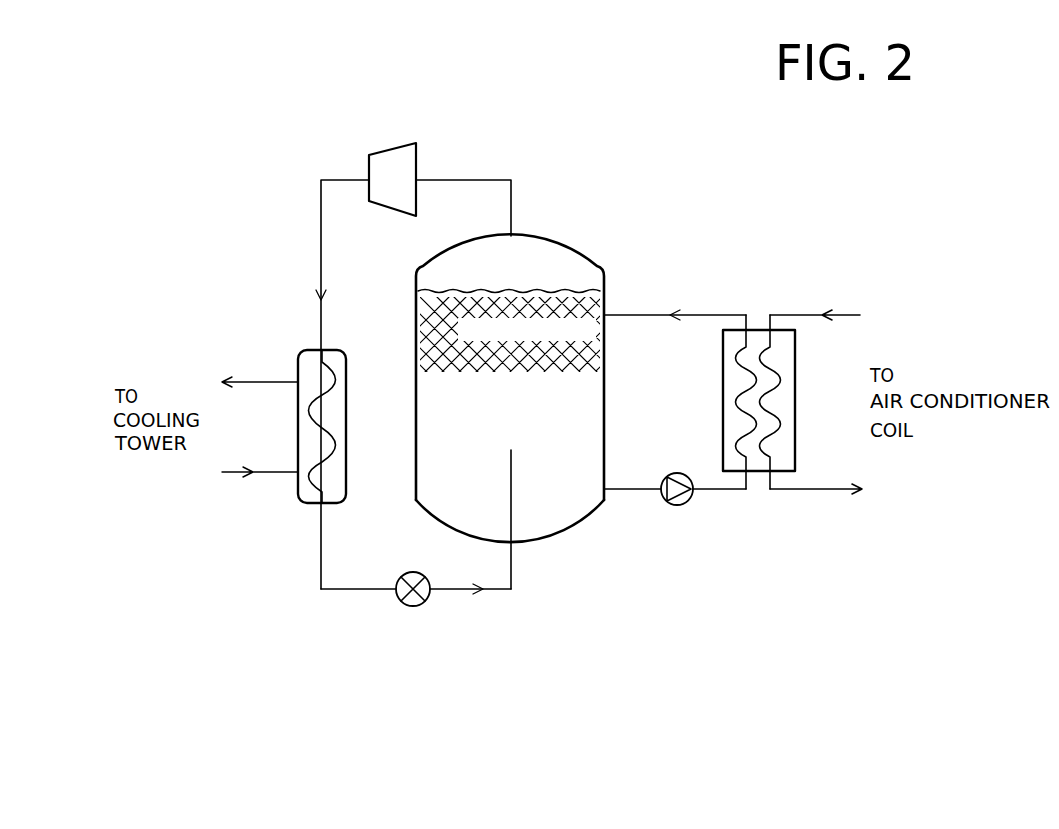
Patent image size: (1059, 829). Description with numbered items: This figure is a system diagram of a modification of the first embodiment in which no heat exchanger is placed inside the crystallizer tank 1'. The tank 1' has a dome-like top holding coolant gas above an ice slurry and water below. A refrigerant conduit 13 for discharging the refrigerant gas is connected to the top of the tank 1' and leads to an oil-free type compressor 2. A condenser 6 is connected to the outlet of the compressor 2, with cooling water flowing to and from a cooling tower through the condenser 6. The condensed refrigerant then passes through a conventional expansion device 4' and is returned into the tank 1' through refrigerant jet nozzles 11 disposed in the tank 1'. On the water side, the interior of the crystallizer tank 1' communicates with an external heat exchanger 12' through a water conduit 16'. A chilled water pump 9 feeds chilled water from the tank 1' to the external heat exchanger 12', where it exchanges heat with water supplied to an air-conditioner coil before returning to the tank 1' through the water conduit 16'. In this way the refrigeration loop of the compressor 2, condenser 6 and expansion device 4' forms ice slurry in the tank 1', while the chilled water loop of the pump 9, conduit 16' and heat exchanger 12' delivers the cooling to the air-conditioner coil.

The compressor 2 is at (392, 152).
The refrigerant conduit 13 is at (340, 178).
The crystallizer tank 1' is at (511, 368).
The water conduit 16' is at (675, 295).
The condenser 6 is at (298, 365).
The refrigerant jet nozzles 11 is at (511, 480).
The chilled water pump 9 is at (677, 506).
The external heat exchanger 12' is at (759, 426).
The expansion device 4' is at (413, 619).